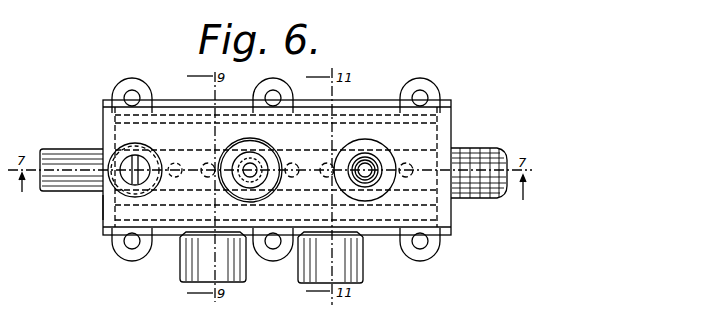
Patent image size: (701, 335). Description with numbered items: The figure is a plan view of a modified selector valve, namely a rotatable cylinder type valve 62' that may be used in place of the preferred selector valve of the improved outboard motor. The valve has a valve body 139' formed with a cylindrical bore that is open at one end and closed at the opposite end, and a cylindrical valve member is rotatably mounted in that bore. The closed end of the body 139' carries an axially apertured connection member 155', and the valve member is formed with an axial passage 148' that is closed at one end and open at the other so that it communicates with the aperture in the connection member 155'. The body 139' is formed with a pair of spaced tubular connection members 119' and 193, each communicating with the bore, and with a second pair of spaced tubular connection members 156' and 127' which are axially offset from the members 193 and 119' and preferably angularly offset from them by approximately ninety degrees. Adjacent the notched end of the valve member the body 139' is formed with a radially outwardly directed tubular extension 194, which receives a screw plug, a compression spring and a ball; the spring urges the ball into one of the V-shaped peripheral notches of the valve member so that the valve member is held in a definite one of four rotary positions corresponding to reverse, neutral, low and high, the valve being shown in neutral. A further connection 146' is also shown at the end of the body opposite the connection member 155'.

The valve body 139' is at (277, 160).
The rotatable cylinder type valve 62' is at (86, 216).
The tubular extension 194 is at (125, 148).
The axial passage 148' is at (191, 153).
The tubular connection member 193 is at (272, 153).
The tubular connection member 119' is at (375, 165).
The inlet pipe connection 146' is at (71, 182).
The connection member 155' is at (479, 159).
The tubular connection member 156' is at (193, 257).
The tubular connection member 127' is at (310, 261).